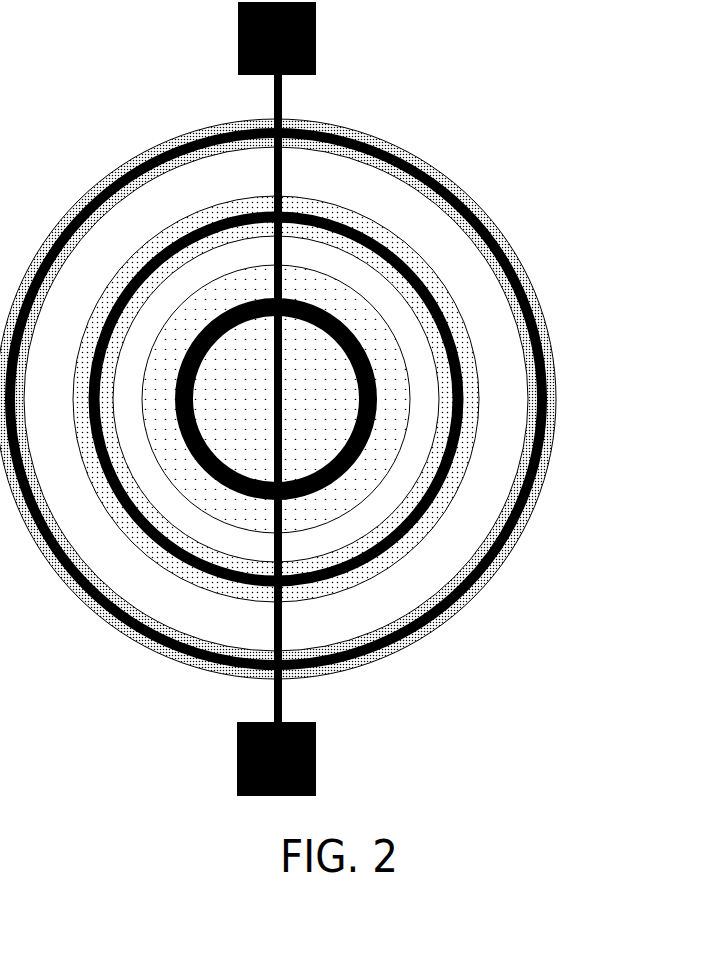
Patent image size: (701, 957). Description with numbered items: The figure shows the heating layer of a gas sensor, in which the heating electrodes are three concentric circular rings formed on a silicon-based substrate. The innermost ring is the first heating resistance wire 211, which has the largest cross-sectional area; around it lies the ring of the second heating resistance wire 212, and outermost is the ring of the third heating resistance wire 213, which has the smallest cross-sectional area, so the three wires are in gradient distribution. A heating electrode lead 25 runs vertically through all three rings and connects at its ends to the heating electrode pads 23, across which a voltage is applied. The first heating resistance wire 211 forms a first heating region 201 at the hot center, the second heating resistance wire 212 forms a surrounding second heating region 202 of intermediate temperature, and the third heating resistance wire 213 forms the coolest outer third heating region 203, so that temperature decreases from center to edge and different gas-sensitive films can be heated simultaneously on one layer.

The heating electrode pads 23 is at (317, 38).
The heating electrode lead 25 is at (282, 163).
The first heating region 201 is at (323, 397).
The second heating region 202 is at (448, 280).
The third heating region 203 is at (470, 188).
The first heating resistance wire 211 is at (360, 460).
The second heating resistance wire 212 is at (450, 470).
The third heating resistance wire 213 is at (543, 457).